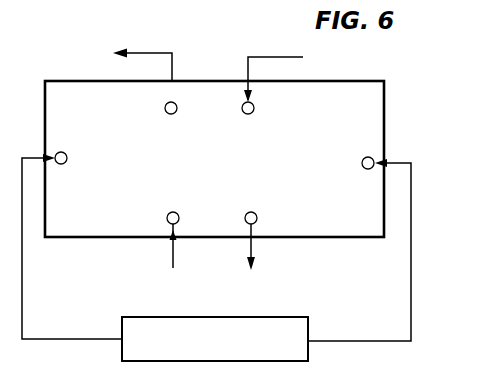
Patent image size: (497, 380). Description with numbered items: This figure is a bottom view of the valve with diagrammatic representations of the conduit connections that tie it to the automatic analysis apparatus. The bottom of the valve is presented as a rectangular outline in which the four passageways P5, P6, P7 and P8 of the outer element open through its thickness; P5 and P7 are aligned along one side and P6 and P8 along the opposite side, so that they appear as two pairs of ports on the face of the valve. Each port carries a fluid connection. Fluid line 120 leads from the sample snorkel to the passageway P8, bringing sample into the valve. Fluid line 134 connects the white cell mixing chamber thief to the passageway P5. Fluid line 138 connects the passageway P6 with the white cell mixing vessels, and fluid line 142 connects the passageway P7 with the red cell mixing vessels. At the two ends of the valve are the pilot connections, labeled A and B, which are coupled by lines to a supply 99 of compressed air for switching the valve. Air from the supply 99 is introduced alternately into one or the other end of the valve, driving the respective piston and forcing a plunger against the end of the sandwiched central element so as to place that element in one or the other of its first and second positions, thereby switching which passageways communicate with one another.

The supply of compressed air 99 is at (195, 317).
The fluid line 120 is at (172, 258).
The fluid line 134 is at (263, 57).
The fluid line 138 is at (254, 250).
The fluid line 142 is at (145, 53).
The passageway P5 is at (255, 108).
The passageway P6 is at (257, 216).
The passageway P7 is at (165, 108).
The passageway P8 is at (167, 214).
The pilot port A is at (358, 164).
The pilot port B is at (67, 159).